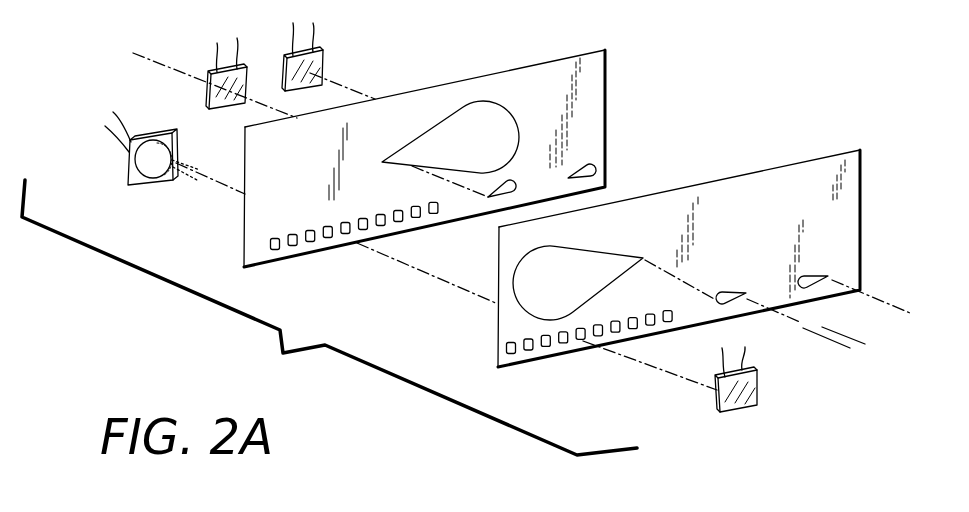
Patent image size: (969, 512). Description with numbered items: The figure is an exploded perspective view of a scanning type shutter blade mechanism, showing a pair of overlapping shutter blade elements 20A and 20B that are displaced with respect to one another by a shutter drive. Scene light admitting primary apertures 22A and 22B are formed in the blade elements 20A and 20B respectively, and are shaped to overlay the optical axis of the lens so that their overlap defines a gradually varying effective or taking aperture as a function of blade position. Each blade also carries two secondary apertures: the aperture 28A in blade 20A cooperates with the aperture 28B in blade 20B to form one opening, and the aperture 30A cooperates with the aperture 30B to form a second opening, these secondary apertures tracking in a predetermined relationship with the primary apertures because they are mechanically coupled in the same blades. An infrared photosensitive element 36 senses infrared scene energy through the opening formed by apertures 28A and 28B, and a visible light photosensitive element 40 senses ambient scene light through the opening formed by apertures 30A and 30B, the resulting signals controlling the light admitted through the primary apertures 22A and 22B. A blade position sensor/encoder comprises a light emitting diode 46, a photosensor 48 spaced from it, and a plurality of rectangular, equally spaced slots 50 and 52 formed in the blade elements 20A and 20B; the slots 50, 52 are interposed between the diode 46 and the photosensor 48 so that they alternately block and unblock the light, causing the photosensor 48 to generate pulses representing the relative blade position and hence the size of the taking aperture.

The shutter blade element 20A is at (750, 173).
The shutter blade element 20B is at (553, 62).
The primary aperture 22A is at (537, 300).
The primary aperture 22B is at (462, 128).
The secondary aperture 28A is at (740, 292).
The secondary aperture 28B is at (503, 200).
The secondary aperture 30A is at (808, 277).
The secondary aperture 30B is at (597, 168).
The infrared photosensitive element 36 is at (210, 78).
The visible light photosensitive element 40 is at (327, 62).
The light emitting diode 46 is at (158, 183).
The photosensor 48 is at (758, 387).
The slots 50 is at (515, 352).
The slots 52 is at (280, 248).